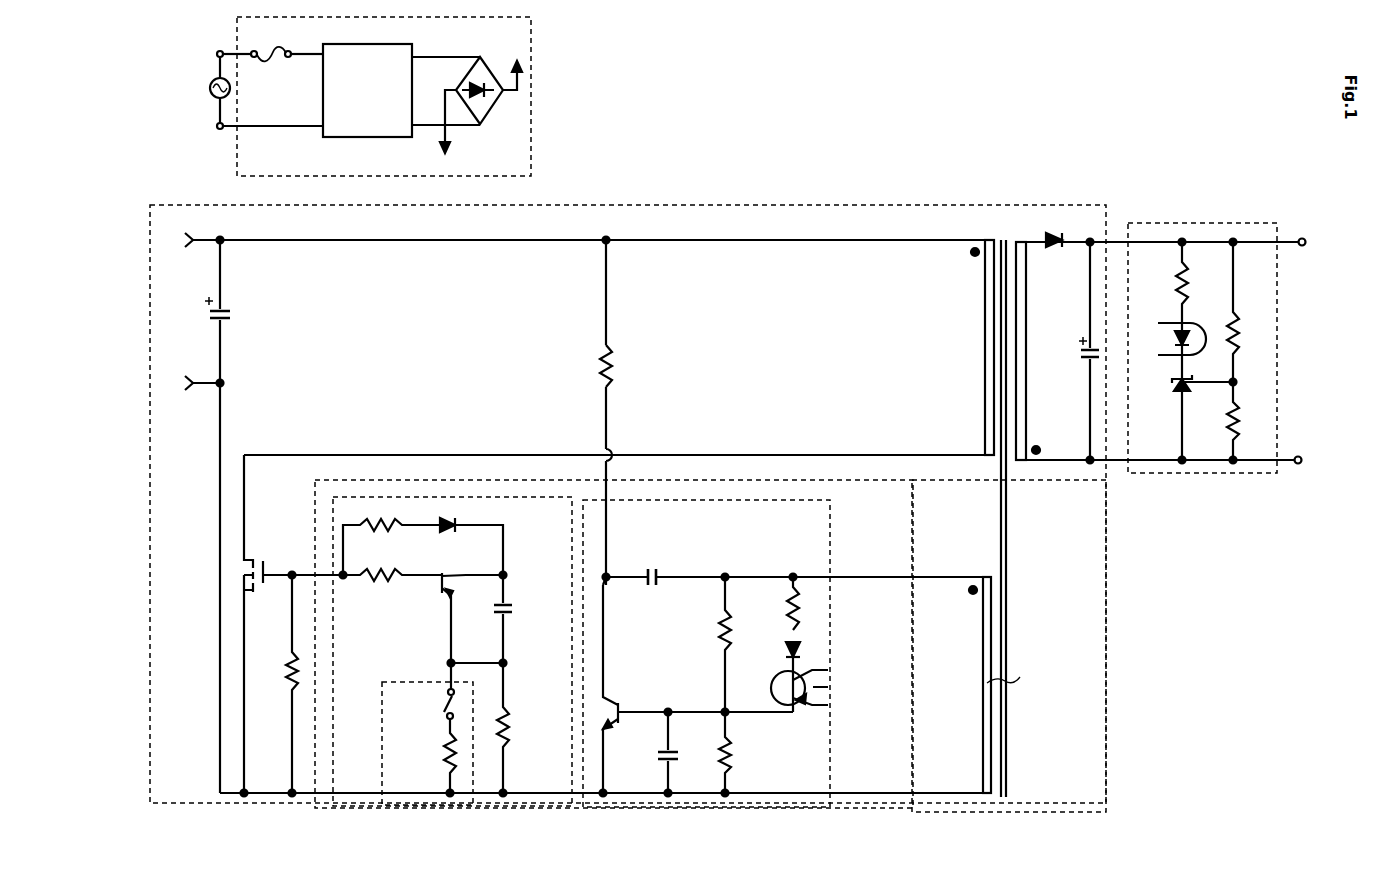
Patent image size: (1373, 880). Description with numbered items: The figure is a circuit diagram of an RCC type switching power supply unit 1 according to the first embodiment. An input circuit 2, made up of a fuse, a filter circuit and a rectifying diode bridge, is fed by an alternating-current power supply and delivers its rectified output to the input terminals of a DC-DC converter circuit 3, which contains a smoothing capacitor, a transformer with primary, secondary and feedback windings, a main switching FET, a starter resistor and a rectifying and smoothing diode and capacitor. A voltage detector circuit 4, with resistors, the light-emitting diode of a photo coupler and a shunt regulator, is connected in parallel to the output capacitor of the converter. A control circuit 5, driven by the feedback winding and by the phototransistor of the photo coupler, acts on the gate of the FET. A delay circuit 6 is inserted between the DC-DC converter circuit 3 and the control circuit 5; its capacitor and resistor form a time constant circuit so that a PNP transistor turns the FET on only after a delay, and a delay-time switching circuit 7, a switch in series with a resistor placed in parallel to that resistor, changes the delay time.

The switching power supply unit 1 is at (1176, 62).
The input circuit 2 is at (518, 118).
The DC-DC converter circuit 3 is at (858, 220).
The voltage detector circuit 4 is at (1204, 224).
The control circuit 5 is at (661, 808).
The delay circuit 6 is at (356, 802).
The delay-time switching circuit 7 is at (406, 802).